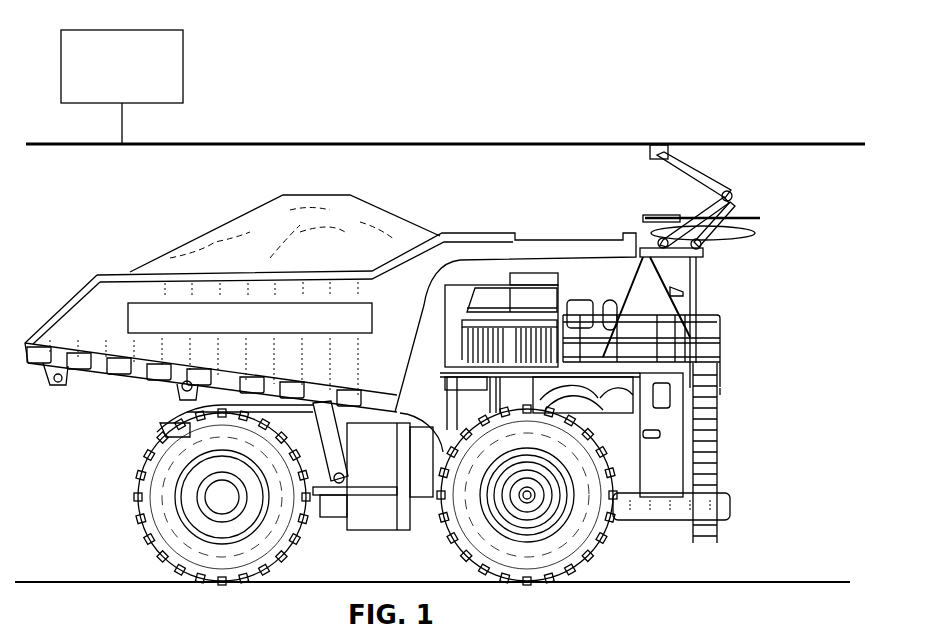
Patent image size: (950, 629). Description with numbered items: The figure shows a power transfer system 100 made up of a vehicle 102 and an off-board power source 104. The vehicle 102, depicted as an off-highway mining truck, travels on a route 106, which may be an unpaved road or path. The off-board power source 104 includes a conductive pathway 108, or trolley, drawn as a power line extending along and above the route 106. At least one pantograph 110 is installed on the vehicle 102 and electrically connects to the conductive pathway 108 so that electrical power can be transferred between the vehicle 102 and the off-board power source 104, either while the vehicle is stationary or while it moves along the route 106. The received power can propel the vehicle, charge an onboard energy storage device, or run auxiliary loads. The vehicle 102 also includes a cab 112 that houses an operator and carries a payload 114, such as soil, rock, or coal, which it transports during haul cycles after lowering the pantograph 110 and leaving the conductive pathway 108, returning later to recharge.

The power transfer system 100 is at (780, 49).
The vehicle 102 is at (484, 253).
The off-board power source 104 is at (142, 28).
The route 106 is at (788, 581).
The conductive pathway 108 is at (306, 143).
The pantograph 110 is at (713, 187).
The cab 112 is at (587, 307).
The payload 114 is at (260, 235).